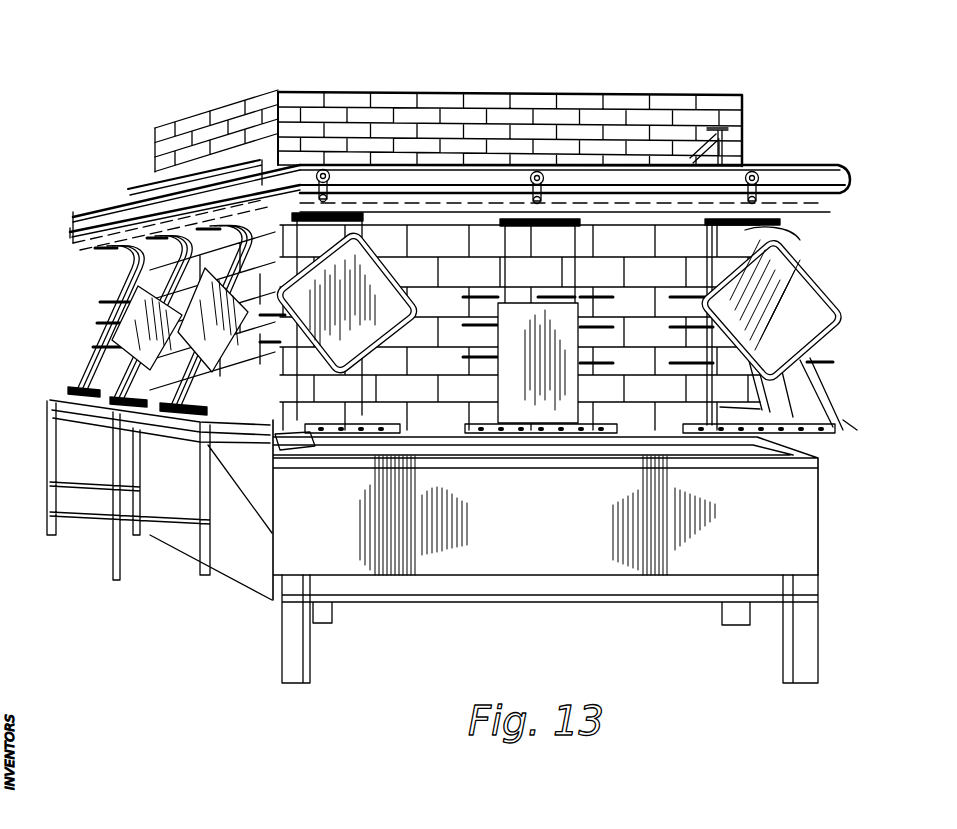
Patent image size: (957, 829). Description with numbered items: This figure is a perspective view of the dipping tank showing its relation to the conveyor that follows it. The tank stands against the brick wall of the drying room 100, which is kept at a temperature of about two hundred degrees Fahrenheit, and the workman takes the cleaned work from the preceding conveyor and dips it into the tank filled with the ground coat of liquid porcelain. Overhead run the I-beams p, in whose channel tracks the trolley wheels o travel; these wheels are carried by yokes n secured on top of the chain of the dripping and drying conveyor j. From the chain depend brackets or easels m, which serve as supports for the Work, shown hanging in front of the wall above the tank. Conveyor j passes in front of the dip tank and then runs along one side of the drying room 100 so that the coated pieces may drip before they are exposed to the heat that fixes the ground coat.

The drying room 100 is at (627, 92).
The I-beams p is at (415, 168).
The trolley wheels o is at (326, 170).
The yokes n is at (336, 192).
The dripping and drying conveyor j is at (297, 170).
The brackets or easels m is at (87, 355).
The work Work is at (827, 315).